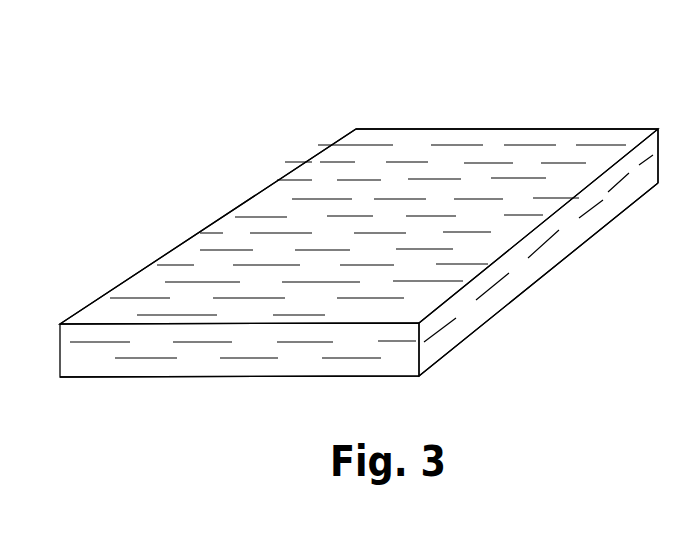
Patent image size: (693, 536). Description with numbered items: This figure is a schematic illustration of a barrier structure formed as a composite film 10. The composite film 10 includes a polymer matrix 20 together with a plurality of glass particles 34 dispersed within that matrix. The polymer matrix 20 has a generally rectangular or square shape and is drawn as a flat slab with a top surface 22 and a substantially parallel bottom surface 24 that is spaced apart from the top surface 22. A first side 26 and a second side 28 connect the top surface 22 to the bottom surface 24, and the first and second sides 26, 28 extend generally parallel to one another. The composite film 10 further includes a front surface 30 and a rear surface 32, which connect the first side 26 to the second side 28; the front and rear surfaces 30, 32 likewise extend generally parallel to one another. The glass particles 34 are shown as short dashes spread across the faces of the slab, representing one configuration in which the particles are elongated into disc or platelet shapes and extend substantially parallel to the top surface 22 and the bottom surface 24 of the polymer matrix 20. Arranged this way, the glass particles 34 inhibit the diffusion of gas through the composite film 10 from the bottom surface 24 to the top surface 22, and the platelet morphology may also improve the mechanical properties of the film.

The composite film 10 is at (138, 127).
The polymer matrix 20 is at (273, 180).
The top surface 22 is at (629, 138).
The bottom surface 24 is at (399, 377).
The first side 26 is at (177, 247).
The second side 28 is at (539, 252).
The front surface 30 is at (305, 353).
The rear surface 32 is at (479, 128).
The glass particles 34 is at (363, 178).